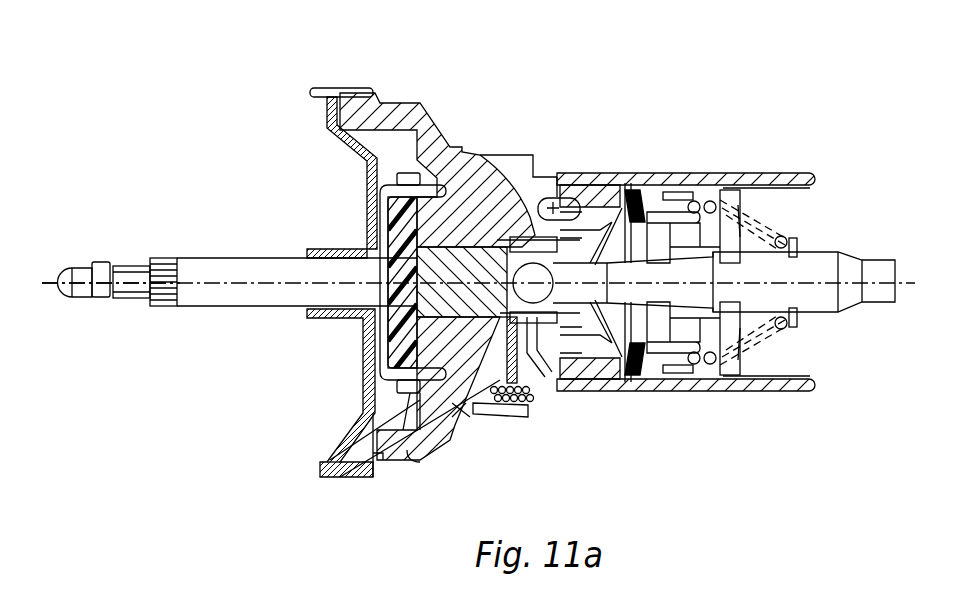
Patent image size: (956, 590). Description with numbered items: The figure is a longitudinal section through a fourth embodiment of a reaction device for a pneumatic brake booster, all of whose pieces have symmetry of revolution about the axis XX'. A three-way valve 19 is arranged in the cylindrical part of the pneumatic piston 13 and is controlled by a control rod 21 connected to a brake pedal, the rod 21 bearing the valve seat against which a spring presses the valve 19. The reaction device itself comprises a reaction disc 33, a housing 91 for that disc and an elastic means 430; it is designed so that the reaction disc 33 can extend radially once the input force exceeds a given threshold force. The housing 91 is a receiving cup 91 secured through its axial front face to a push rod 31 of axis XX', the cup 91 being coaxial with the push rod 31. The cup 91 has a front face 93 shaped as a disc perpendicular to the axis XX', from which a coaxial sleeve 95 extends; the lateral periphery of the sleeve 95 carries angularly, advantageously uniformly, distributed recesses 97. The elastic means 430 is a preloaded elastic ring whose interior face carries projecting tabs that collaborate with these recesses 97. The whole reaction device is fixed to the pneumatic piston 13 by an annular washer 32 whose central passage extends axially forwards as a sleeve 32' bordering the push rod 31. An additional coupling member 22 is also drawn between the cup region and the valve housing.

The pneumatic piston 13 is at (462, 415).
The three-way valve 19 is at (590, 177).
The control rod 21 is at (825, 288).
The coupling member 22 is at (553, 205).
The push rod 31 is at (192, 292).
The annular washer 32 is at (305, 167).
The sleeve of the annular washer 32' is at (307, 393).
The reaction disc 33 is at (520, 245).
The receiving cup 91 is at (375, 413).
The front face 93 is at (384, 240).
The sleeve 95 is at (440, 175).
The recesses 97 is at (382, 192).
The elastic means 430 is at (412, 415).
The axis XX' is at (111, 332).